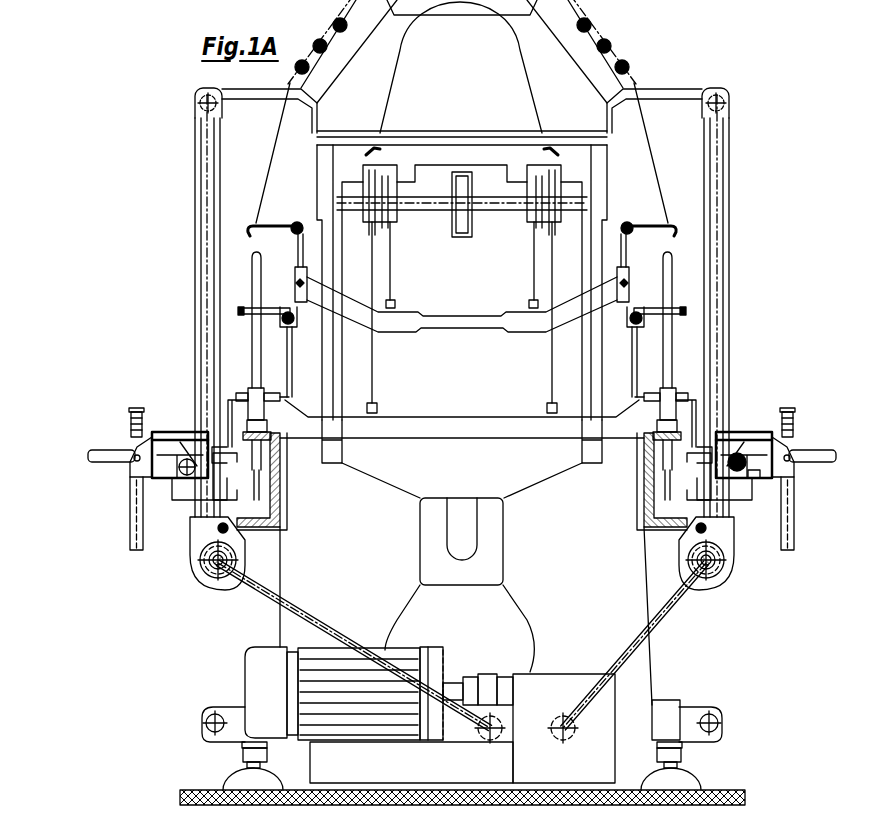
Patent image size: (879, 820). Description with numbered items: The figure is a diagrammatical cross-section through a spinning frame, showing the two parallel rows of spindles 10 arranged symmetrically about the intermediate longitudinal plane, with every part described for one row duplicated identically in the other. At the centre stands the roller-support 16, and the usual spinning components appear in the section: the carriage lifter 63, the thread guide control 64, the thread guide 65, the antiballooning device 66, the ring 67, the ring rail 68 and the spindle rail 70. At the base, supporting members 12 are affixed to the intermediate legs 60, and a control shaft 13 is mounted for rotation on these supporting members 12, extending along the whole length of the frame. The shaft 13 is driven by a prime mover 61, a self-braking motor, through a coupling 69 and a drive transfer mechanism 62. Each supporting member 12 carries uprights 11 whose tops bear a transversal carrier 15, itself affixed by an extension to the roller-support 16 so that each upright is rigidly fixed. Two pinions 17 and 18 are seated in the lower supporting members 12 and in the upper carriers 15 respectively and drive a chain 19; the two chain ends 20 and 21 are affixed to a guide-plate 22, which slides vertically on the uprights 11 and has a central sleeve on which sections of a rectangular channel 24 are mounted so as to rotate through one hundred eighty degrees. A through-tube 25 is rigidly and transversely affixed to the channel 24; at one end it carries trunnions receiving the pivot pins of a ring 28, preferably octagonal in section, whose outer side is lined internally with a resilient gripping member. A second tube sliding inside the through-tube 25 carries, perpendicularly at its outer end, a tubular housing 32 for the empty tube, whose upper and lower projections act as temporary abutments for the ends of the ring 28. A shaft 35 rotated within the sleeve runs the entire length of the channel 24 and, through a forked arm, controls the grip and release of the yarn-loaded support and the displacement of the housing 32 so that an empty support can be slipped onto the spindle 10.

The spindle 10 is at (257, 343).
The upright 11 is at (195, 212).
The supporting member 12 is at (193, 568).
The control shaft 13 is at (212, 573).
The transversal carrier 15 is at (195, 101).
The roller-support 16 is at (542, 85).
The pinion 17 is at (206, 547).
The pinion 18 is at (203, 110).
The chain 19 is at (200, 245).
The chain end 20 is at (227, 455).
The chain end 21 is at (224, 488).
The guide-plate 22 is at (178, 492).
The rectangular channel 24 is at (175, 432).
The through-tube 25 is at (739, 430).
The ring 28 is at (108, 453).
The tubular housing 32 is at (133, 495).
The shaft 35 is at (755, 478).
The intermediate leg 60 is at (645, 663).
The prime mover 61 is at (358, 645).
The drive transfer mechanism 62 is at (318, 603).
The carriage lifter 63 is at (465, 420).
The thread guide control 64 is at (470, 322).
The thread guide 65 is at (287, 223).
The antiballooning device 66 is at (235, 308).
The ring 67 is at (243, 392).
The ring rail 68 is at (230, 402).
The coupling 69 is at (493, 680).
The spindle rail 70 is at (282, 483).